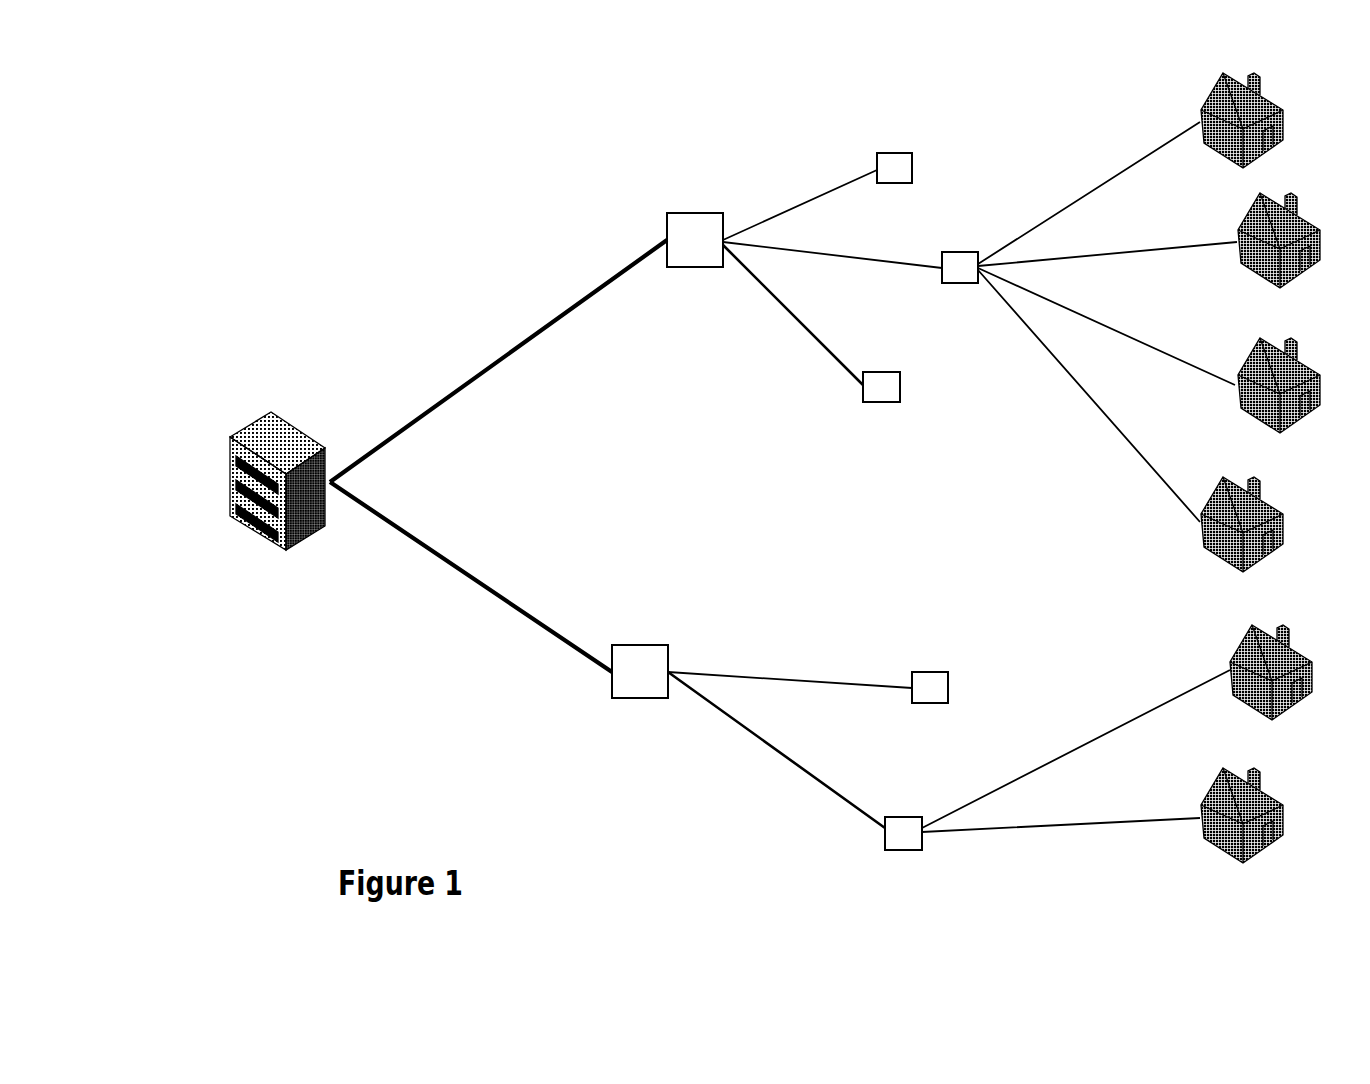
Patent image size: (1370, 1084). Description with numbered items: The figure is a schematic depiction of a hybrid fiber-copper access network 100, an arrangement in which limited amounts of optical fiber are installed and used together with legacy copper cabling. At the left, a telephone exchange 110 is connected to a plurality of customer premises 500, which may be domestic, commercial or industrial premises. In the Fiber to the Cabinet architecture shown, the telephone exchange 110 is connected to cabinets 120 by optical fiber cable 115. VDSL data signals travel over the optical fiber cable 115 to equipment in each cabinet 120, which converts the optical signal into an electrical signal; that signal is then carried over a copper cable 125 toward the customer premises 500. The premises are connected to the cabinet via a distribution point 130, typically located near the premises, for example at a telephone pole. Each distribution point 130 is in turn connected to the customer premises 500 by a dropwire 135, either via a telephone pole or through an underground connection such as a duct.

The hybrid fiber-copper access network 100 is at (278, 120).
The telephone exchange 110 is at (277, 560).
The optical fiber cable 115 is at (509, 592).
The cabinet 120 is at (638, 640).
The copper cable 125 is at (775, 747).
The distribution point 130 is at (960, 288).
The dropwire 135 is at (1073, 747).
The customer premises 500 is at (1225, 567).